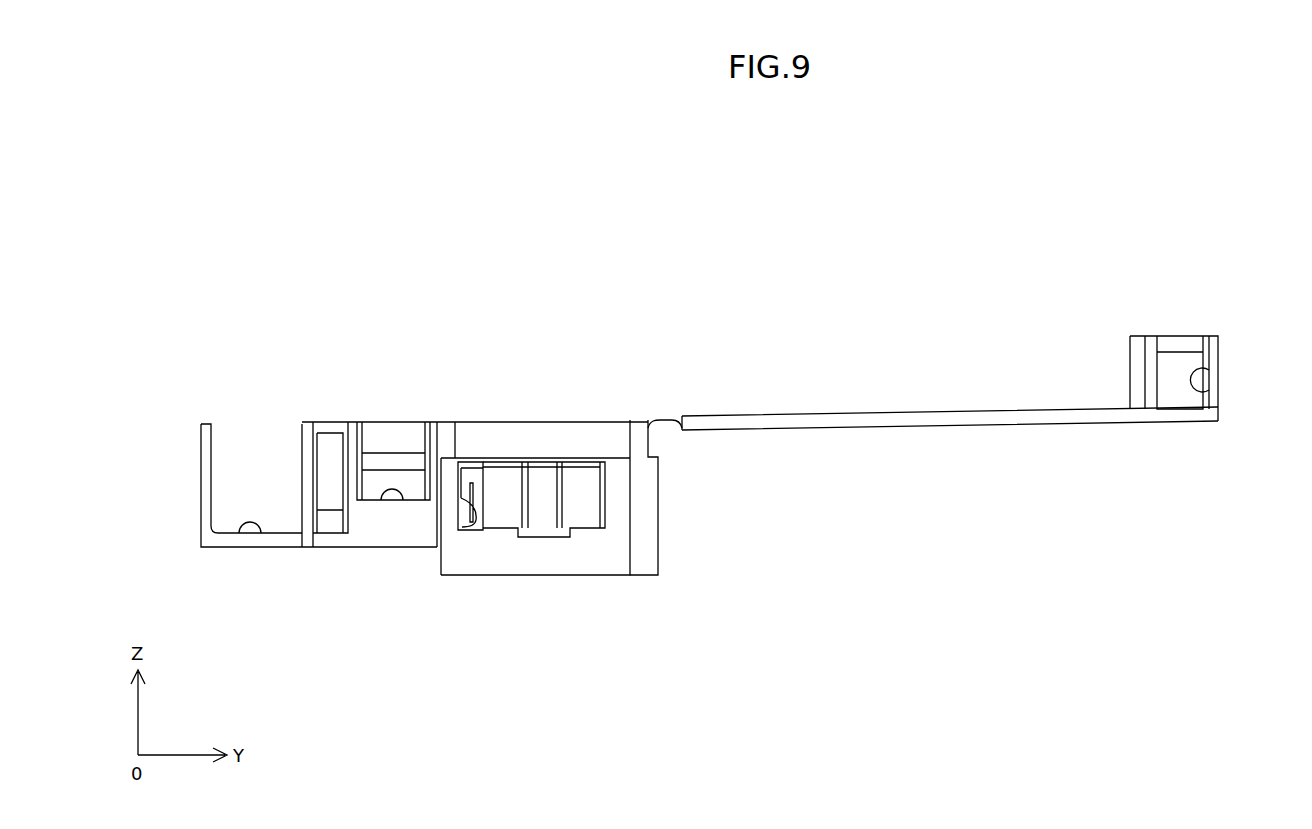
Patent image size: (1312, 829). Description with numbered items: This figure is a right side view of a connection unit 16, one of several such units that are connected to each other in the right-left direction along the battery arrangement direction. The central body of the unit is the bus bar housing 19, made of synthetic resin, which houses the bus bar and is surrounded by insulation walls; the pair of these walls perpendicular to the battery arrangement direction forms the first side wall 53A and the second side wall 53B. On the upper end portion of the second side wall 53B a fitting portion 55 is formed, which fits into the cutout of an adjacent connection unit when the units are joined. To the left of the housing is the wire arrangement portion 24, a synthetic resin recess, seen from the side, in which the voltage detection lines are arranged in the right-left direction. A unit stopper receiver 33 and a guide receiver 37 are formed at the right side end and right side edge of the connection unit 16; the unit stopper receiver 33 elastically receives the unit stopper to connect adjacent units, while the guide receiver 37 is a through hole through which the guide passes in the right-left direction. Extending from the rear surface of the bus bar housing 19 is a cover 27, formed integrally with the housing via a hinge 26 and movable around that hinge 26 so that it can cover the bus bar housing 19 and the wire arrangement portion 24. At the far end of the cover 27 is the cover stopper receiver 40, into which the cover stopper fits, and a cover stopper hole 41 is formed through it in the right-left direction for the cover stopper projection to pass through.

The connection unit 16 is at (207, 473).
The wire arrangement portion 24 is at (260, 533).
The guide receiver 37 is at (318, 468).
The unit stopper receiver 33 is at (403, 500).
The fitting portion 55 is at (572, 432).
The bus bar housing 19 is at (642, 444).
The first side wall 53A is at (502, 502).
The second side wall 53B is at (584, 553).
The hinge 26 is at (667, 420).
The cover 27 is at (1000, 418).
The cover stopper receiver 40 is at (1178, 342).
The cover stopper hole 41 is at (1210, 390).